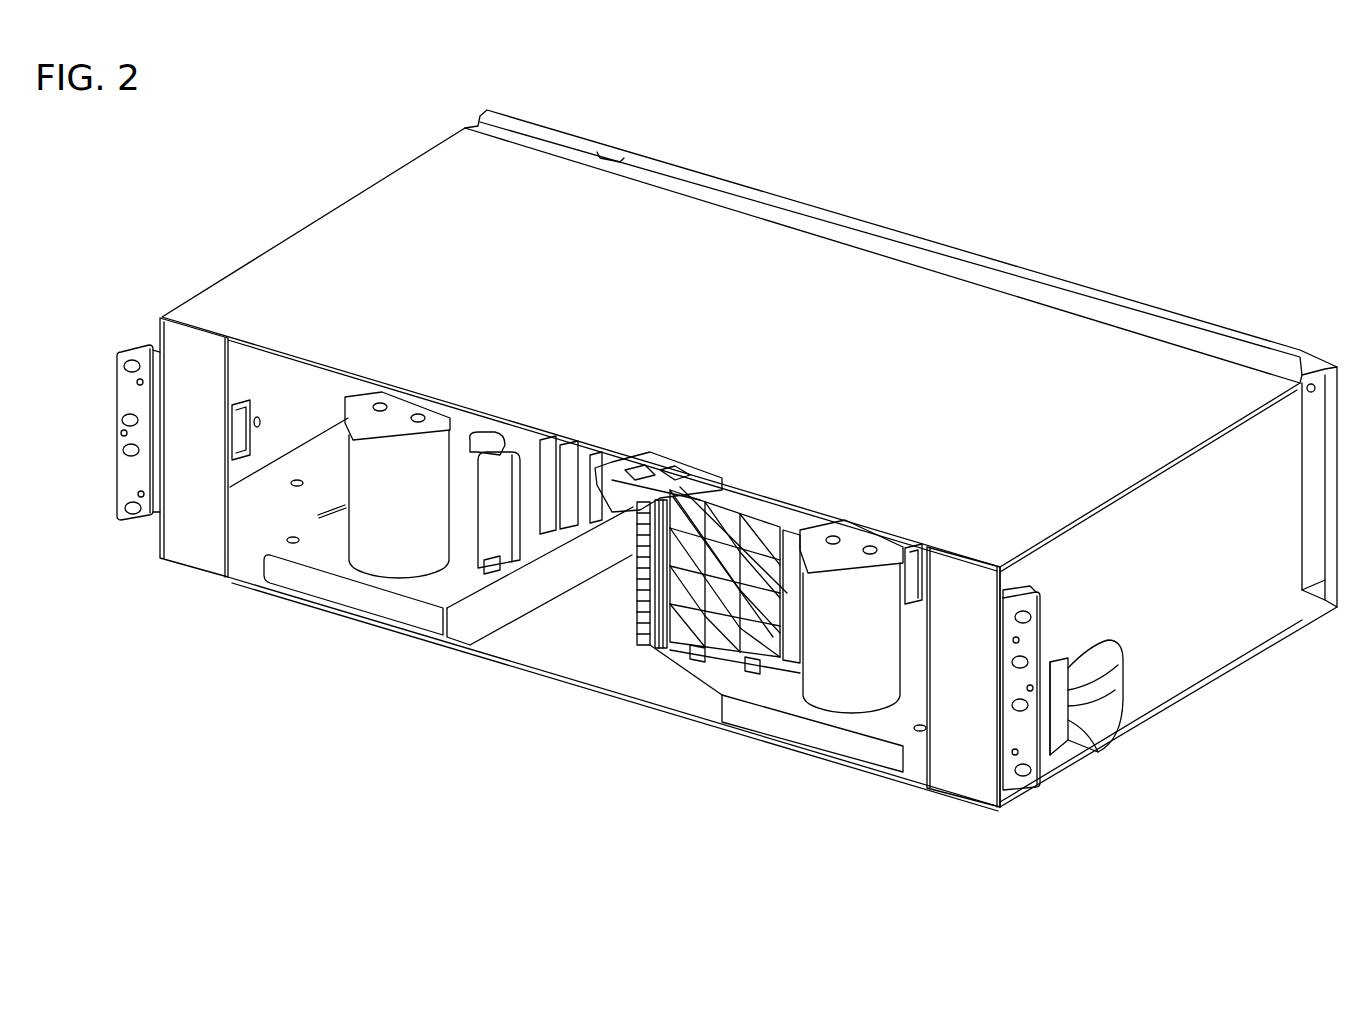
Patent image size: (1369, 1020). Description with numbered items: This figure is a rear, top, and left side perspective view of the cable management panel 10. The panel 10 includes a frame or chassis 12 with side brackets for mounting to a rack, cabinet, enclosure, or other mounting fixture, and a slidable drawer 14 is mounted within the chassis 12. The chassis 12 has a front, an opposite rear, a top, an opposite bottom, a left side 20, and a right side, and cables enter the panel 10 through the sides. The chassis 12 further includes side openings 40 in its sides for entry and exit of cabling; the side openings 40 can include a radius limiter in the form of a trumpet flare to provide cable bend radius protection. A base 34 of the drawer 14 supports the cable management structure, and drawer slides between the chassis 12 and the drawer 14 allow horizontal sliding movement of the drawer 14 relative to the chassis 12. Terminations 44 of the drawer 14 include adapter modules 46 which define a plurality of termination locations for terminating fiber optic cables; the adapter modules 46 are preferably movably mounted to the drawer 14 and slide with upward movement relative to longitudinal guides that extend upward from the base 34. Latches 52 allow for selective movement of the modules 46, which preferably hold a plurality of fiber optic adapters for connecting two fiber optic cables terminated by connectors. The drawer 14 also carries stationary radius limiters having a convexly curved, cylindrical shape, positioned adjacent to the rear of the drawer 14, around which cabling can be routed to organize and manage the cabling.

The cable management panel 10 is at (334, 172).
The chassis 12 is at (255, 257).
The slidable drawer 14 is at (525, 638).
The left side 20 is at (1172, 563).
The base 34 is at (403, 598).
The side openings 40 is at (1112, 766).
The terminations 44 is at (645, 665).
The adapter modules 46 is at (640, 578).
The latches 52 is at (610, 470).